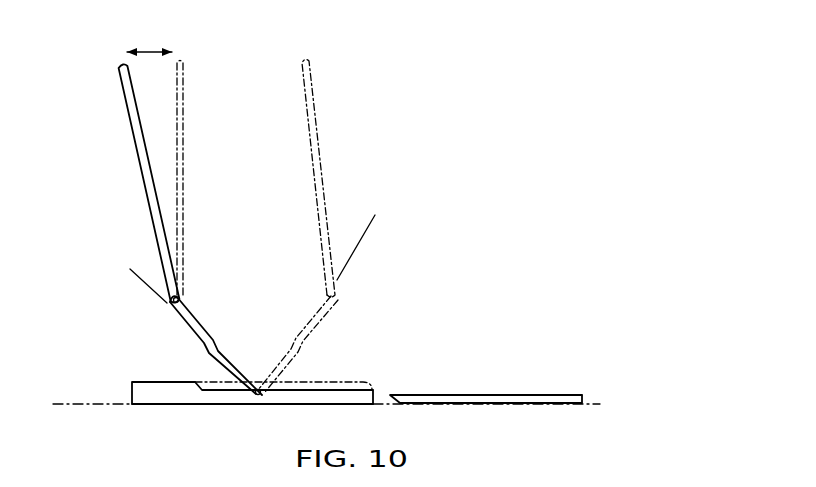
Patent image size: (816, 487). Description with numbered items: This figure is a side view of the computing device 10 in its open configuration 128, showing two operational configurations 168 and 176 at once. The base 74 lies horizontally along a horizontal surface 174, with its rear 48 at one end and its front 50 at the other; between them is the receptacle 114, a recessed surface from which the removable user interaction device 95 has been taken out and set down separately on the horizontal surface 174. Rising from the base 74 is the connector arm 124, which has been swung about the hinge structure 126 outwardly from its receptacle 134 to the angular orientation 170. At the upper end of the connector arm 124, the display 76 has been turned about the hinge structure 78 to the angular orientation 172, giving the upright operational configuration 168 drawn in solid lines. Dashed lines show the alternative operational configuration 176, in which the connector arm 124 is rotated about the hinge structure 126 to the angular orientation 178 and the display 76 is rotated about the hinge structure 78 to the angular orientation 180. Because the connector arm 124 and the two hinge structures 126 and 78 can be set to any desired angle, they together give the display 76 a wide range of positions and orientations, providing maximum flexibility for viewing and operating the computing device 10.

The computing device 10 is at (445, 202).
The open configuration 128 is at (445, 202).
The rear 48 is at (132, 388).
The front 50 is at (382, 397).
The base 74 is at (160, 405).
The display 76 is at (123, 98).
The hinge structure 78 is at (182, 302).
The removable user interaction device 95 is at (535, 394).
The receptacle 114 is at (355, 388).
The connector arm 124 is at (205, 333).
The hinge structure 126 is at (257, 396).
The receptacle 134 is at (143, 382).
The operational configuration 168 is at (195, 67).
The angular orientation 170 is at (200, 347).
The angular orientation 172 is at (158, 256).
The horizontal surface 174 is at (592, 406).
The operational configuration 176 is at (330, 73).
The angular orientation 178 is at (289, 379).
The angular orientation 180 is at (362, 230).